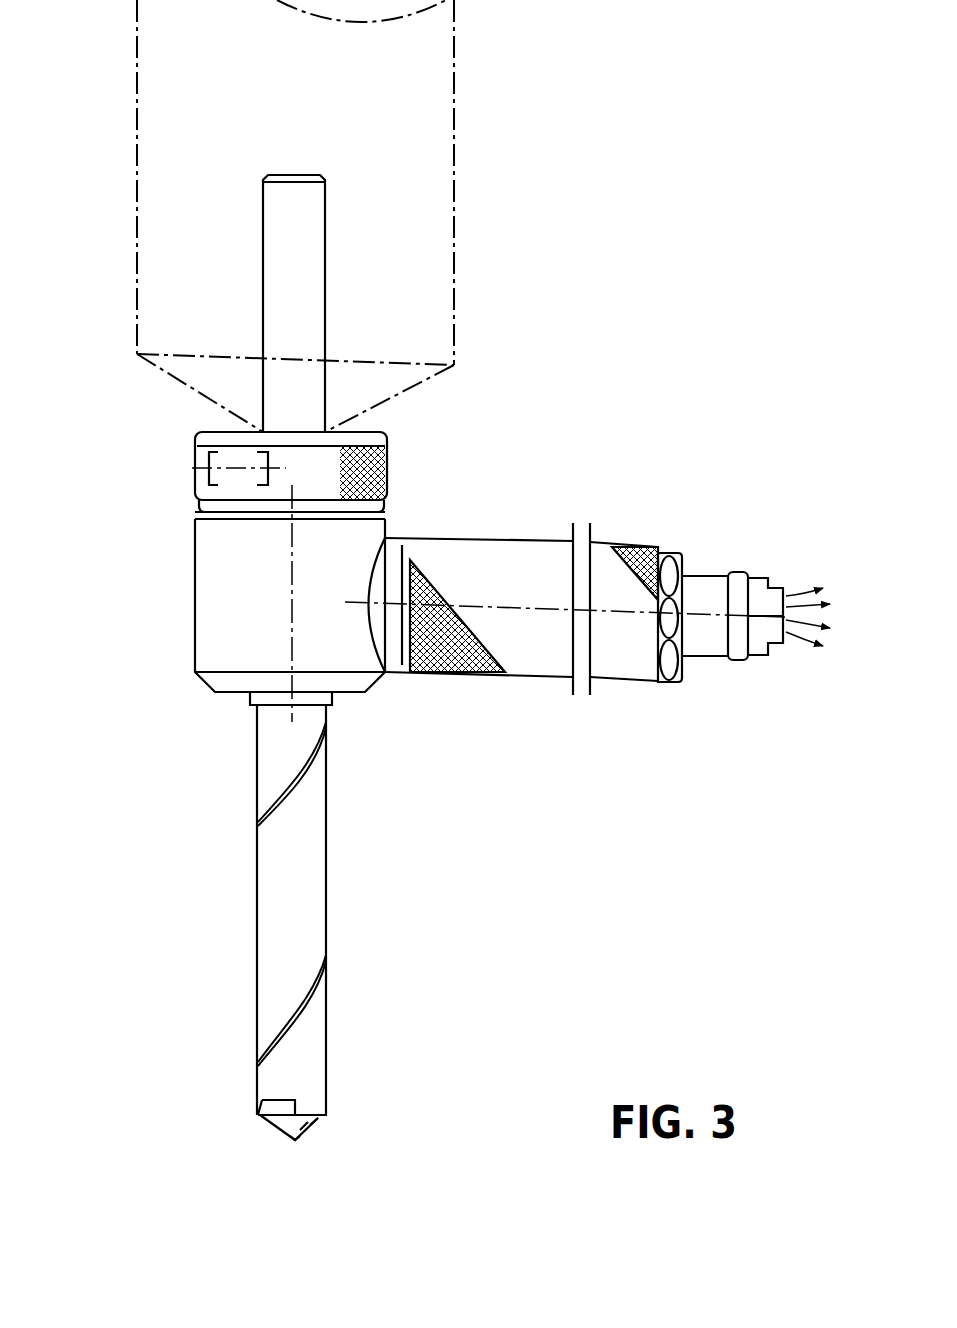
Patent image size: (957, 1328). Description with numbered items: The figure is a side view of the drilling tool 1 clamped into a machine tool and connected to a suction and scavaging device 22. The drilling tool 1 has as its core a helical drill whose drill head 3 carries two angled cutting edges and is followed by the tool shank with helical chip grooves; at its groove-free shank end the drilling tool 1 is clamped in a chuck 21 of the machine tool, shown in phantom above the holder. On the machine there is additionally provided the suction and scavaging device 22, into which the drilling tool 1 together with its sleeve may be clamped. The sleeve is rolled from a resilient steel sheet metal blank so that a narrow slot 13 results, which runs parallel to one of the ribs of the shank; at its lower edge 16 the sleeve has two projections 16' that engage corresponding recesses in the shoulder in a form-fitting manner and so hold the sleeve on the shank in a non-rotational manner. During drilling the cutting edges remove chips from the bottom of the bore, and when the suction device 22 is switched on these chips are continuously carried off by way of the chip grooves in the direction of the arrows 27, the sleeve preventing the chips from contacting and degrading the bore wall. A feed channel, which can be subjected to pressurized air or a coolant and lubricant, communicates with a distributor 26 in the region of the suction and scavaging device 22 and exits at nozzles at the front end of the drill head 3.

The chuck 21 is at (455, 187).
The suction and scavaging device 22 is at (445, 470).
The distributor 26 is at (195, 485).
The arrows 27 is at (793, 590).
The drilling tool 1 is at (327, 878).
The slot 13 is at (298, 1004).
The lower edge 16 is at (191, 1149).
The projections 16' is at (373, 1146).
The drill head 3 is at (305, 1140).